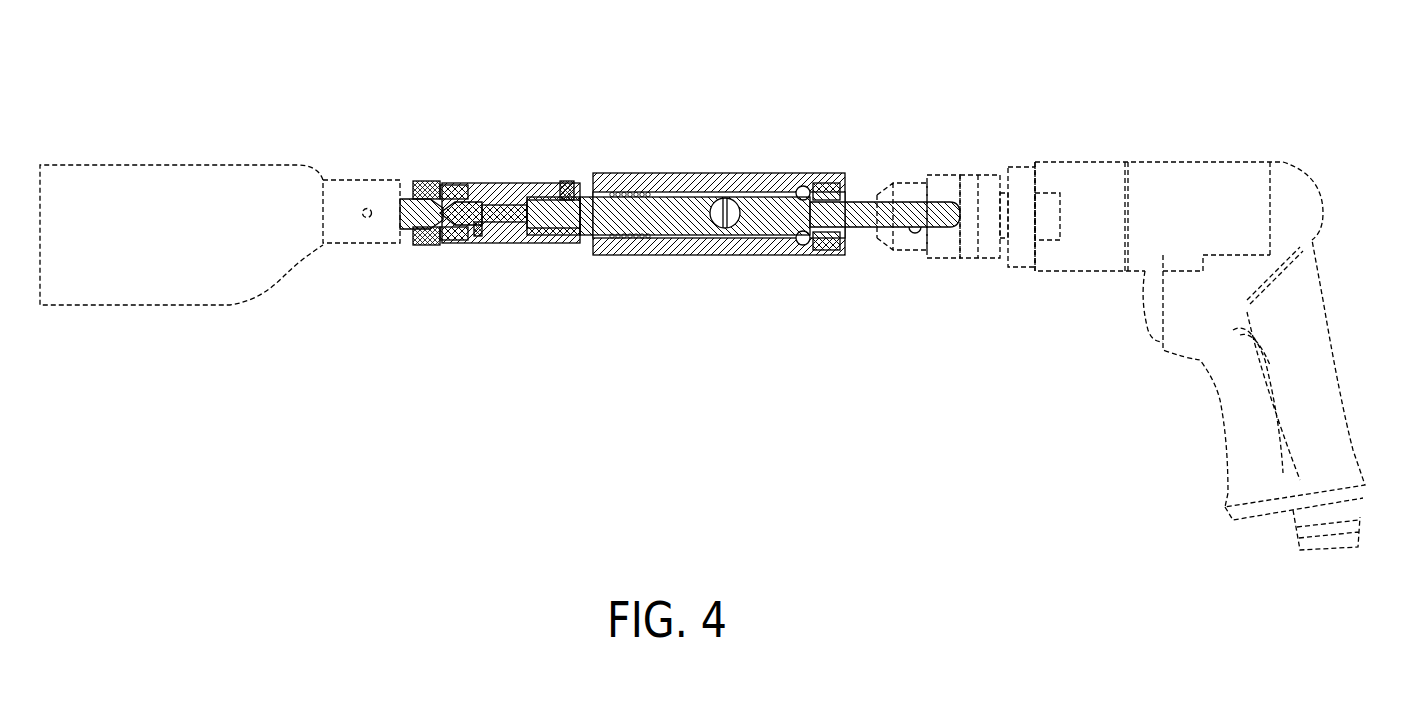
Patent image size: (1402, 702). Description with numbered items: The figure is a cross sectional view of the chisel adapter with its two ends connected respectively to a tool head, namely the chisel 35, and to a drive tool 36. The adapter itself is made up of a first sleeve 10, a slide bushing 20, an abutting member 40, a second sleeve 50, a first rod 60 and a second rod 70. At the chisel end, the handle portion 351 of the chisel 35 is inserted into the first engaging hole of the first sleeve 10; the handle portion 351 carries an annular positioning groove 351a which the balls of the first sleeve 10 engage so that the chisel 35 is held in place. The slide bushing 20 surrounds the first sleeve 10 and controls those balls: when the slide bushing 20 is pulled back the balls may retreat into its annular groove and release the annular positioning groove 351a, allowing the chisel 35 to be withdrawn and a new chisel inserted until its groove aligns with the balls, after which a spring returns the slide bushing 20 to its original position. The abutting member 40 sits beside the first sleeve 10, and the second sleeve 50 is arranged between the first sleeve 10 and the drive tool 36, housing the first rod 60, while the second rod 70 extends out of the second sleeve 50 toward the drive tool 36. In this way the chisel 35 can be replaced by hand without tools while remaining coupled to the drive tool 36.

The first sleeve 10 is at (510, 175).
The slide bushing 20 is at (436, 172).
The tool head (chisel) 35 is at (227, 180).
The handle portion 351 is at (400, 216).
The annular positioning groove 351a is at (428, 243).
The drive tool 36 is at (1093, 175).
The abutting member 40 is at (477, 243).
The second sleeve 50 is at (748, 168).
The first rod 60 is at (663, 185).
The second rod 70 is at (859, 233).